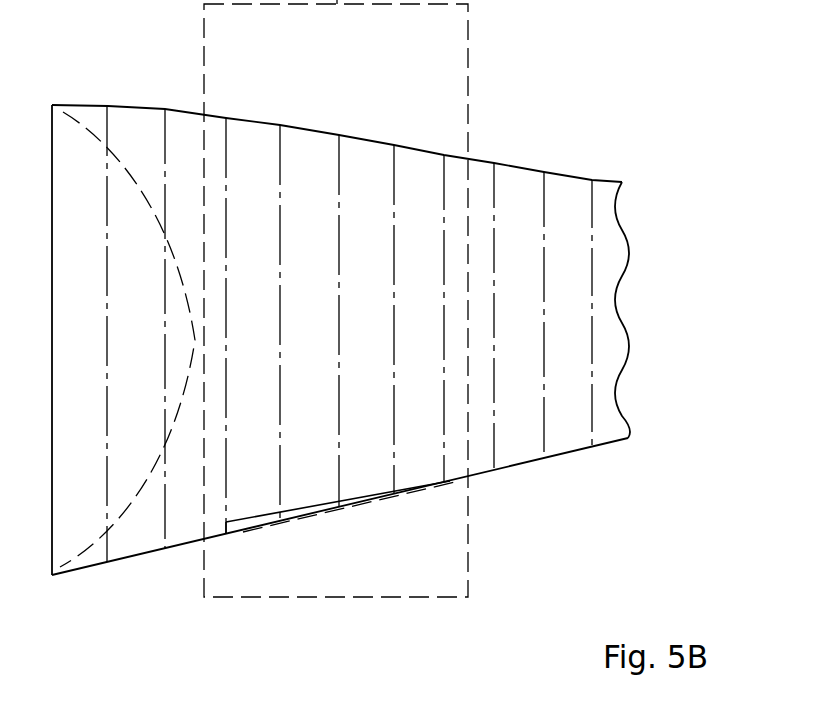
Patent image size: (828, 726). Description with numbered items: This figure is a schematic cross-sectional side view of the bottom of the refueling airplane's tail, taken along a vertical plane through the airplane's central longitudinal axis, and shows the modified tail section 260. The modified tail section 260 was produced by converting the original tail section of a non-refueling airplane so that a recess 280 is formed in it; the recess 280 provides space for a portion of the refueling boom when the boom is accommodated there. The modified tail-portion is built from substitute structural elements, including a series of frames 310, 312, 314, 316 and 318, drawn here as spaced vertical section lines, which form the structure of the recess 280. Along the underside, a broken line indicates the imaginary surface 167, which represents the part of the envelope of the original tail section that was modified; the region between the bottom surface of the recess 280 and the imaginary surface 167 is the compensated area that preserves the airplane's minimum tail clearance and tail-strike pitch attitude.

The modified tail section 260 is at (573, 138).
The frame 310 is at (226, 117).
The frame 312 is at (280, 125).
The frame 314 is at (339, 135).
The frame 316 is at (394, 145).
The frame 318 is at (444, 155).
The recess 280 is at (270, 518).
The imaginary surface 167 is at (313, 517).